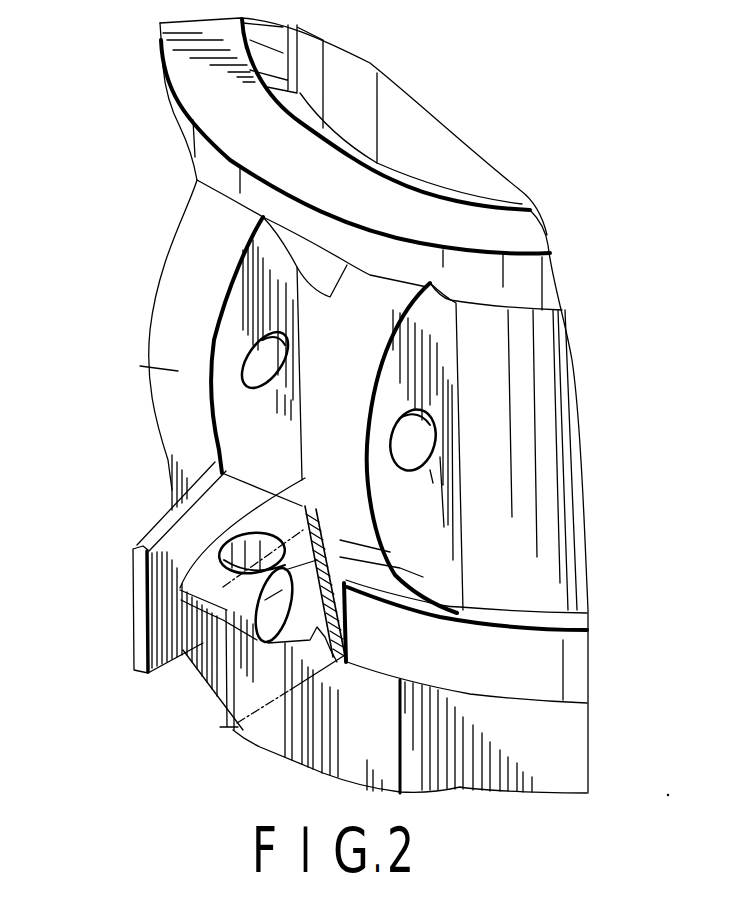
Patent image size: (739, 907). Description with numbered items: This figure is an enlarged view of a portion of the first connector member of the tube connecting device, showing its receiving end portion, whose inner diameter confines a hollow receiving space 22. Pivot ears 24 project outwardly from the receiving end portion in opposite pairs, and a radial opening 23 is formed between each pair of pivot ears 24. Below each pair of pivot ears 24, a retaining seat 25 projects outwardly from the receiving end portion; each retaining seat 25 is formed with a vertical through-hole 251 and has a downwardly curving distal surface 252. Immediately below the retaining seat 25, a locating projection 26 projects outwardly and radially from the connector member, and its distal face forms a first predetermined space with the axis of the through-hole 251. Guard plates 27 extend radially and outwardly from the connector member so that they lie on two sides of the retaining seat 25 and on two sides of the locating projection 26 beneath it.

The hollow receiving space 22 is at (227, 117).
The radial opening 23 is at (307, 297).
The pivot ears 24 is at (300, 413).
The retaining seat 25 is at (183, 573).
The vertical through-hole 251 is at (210, 522).
The downwardly curving distal surface 252 is at (180, 613).
The locating projection 26 is at (287, 647).
The guard plates 27 is at (173, 548).